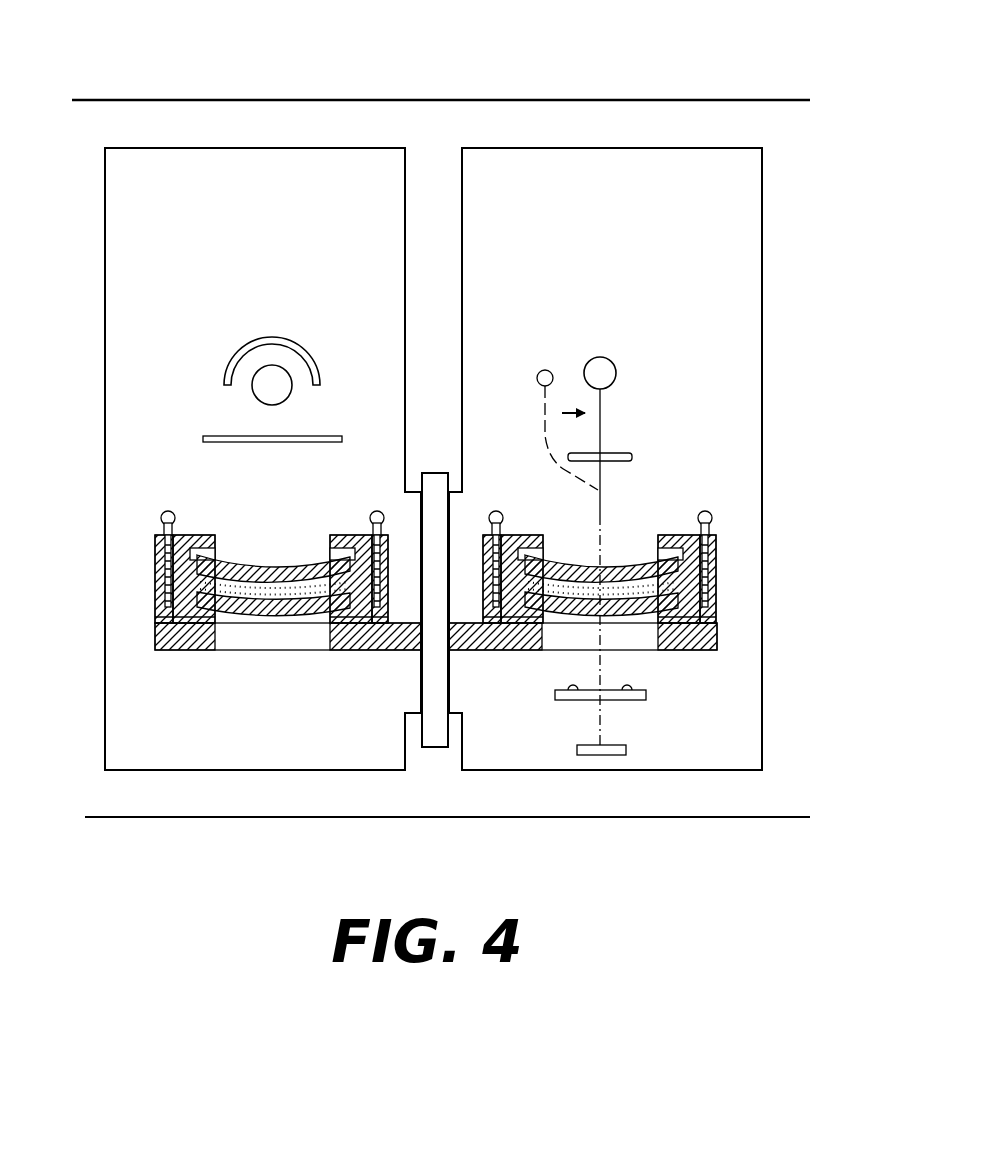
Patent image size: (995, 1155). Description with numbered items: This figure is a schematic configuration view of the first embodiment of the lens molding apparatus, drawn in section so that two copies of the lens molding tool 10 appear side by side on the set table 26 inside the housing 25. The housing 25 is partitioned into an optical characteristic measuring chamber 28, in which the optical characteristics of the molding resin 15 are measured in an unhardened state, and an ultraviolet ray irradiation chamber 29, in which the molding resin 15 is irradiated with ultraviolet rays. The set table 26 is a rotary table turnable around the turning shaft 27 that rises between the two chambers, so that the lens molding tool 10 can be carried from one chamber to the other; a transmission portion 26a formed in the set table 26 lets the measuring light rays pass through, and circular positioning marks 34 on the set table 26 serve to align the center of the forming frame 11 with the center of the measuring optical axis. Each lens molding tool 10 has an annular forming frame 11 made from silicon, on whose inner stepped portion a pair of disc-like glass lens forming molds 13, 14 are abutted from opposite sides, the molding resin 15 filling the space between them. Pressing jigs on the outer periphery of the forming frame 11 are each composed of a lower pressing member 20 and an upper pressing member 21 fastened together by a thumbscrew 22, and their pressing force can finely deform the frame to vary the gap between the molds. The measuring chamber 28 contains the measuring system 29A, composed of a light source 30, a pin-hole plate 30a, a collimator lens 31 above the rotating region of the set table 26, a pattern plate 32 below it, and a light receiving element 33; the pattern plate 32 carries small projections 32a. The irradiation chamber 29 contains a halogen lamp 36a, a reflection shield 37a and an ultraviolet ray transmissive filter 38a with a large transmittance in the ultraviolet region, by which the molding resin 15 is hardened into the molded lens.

The lens molding tool 10 is at (207, 522).
The forming frame 11 is at (183, 630).
The lens forming mold 13 is at (298, 558).
The lens forming mold 14 is at (320, 616).
The molding resin 15 is at (292, 592).
The lower pressing member 20 is at (158, 585).
The upper pressing member 21 is at (160, 540).
The thumbscrew 22 is at (165, 511).
The housing 25 is at (645, 118).
The set table 26 is at (498, 650).
The transmission portion 26a is at (262, 650).
The turning shaft 27 is at (437, 750).
The optical characteristic measuring chamber 28 is at (601, 282).
The ultraviolet ray irradiation chamber 29 is at (238, 242).
The measuring system 29A is at (680, 475).
The light source 30 is at (616, 373).
The pin-hole plate 30a is at (620, 412).
The collimator lens 31 is at (620, 452).
The pattern plate 32 is at (632, 700).
The support projection 32a is at (630, 686).
The light receiving element 33 is at (610, 755).
The positioning marks 34 is at (160, 617).
The halogen lamp 36a is at (280, 380).
The reflection shield 37a is at (275, 337).
The ultraviolet ray transmissive filter 38a is at (205, 437).